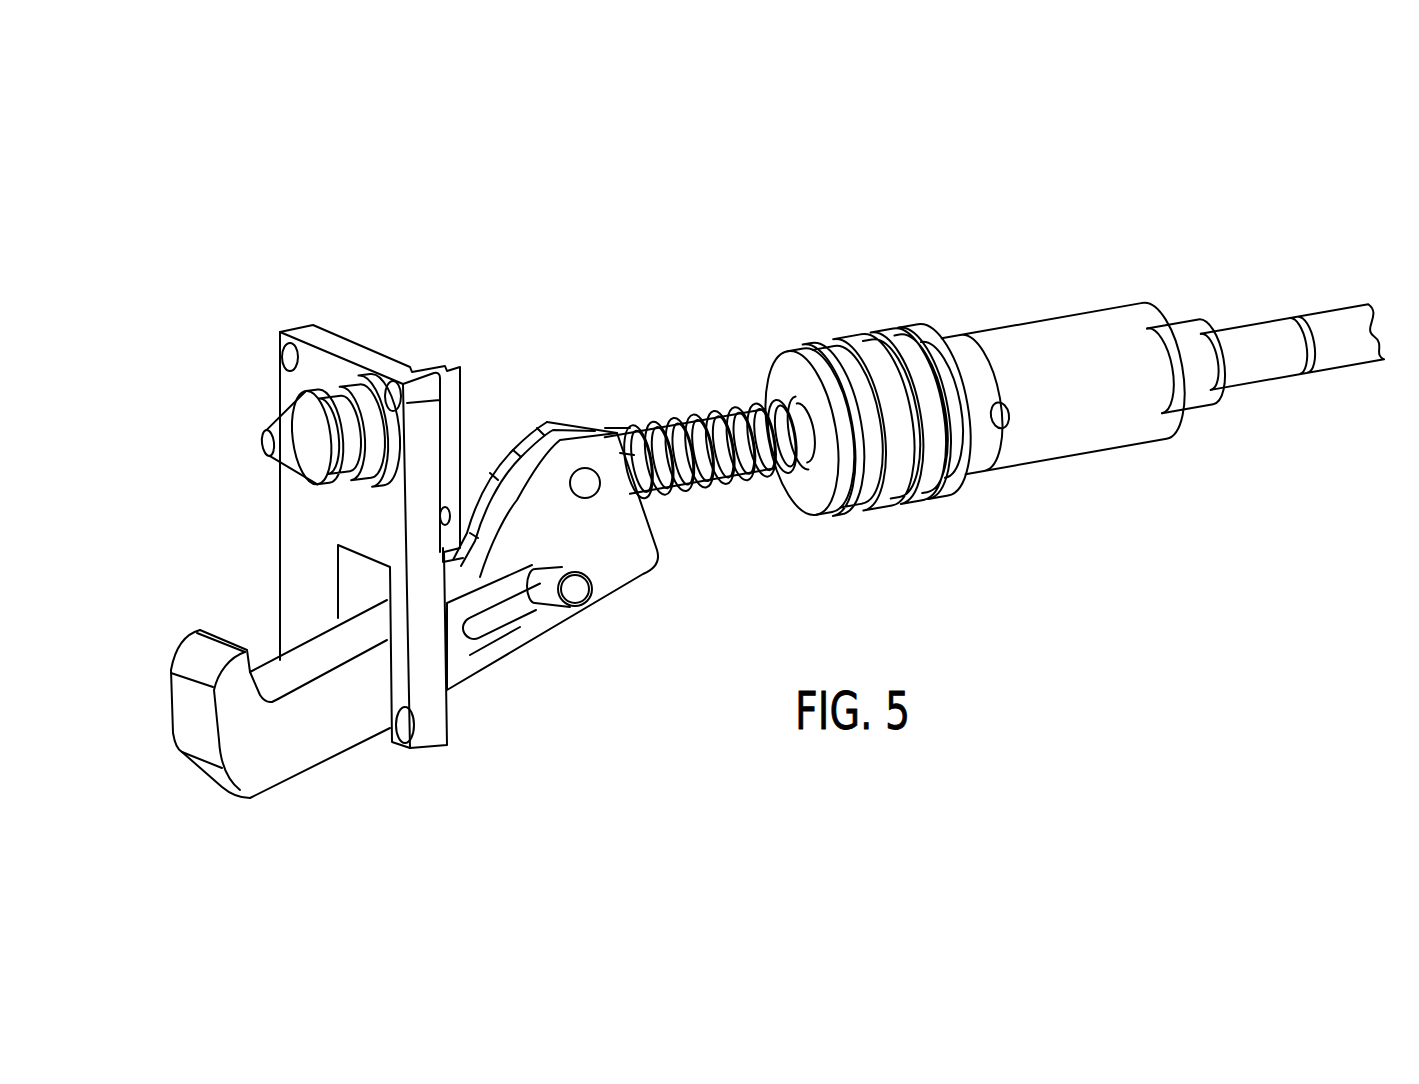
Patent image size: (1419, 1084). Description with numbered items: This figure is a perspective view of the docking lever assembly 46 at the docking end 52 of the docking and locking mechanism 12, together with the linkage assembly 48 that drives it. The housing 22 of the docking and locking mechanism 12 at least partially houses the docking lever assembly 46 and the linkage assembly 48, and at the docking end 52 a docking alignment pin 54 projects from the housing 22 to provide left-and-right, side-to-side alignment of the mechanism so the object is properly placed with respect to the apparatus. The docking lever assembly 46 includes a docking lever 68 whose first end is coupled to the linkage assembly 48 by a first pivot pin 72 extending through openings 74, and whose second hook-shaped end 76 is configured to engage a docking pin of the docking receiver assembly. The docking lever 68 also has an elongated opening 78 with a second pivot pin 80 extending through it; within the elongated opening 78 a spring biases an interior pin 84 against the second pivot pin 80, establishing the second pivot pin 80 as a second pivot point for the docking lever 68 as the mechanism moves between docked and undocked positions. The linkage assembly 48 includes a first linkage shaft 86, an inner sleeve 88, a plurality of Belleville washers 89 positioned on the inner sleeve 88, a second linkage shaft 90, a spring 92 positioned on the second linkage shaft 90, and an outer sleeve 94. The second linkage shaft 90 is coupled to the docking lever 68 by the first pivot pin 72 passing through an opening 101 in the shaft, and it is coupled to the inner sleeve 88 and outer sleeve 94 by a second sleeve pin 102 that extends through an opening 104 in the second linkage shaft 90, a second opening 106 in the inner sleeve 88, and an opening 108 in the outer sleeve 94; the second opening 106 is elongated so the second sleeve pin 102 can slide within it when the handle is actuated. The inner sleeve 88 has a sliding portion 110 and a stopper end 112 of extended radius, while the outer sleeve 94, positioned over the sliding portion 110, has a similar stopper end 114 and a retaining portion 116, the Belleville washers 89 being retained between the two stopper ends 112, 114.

The docking and locking mechanism 12 is at (523, 312).
The first housing 22 is at (368, 348).
The docking lever assembly 46 is at (658, 585).
The linkage assembly 48 is at (997, 212).
The docking end 52 is at (277, 537).
The docking alignment pin 54 is at (292, 438).
The docking lever 68 is at (333, 758).
The first pivot pin 72 is at (588, 481).
The openings 74 is at (588, 406).
The second hook-shaped end 76 is at (160, 736).
The elongated opening 78 is at (543, 620).
The second pivot pin 80 is at (580, 590).
The interior pin 84 is at (488, 617).
The first linkage shaft 86 is at (1260, 342).
The inner sleeve 88 is at (1239, 384).
The Belleville washers 89 is at (846, 334).
The second linkage shaft 90 is at (765, 447).
The spring 92 is at (700, 413).
The outer sleeve 94 is at (1068, 391).
The opening 101 is at (594, 465).
The second sleeve pin 102 is at (1003, 418).
The opening 104 is at (1041, 343).
The second opening 106 is at (1041, 343).
The opening 108 is at (1012, 405).
The sliding portion 110 is at (1200, 388).
The stopper end 112 is at (782, 373).
The stopper end 114 is at (950, 480).
The retaining portion 116 is at (1123, 413).